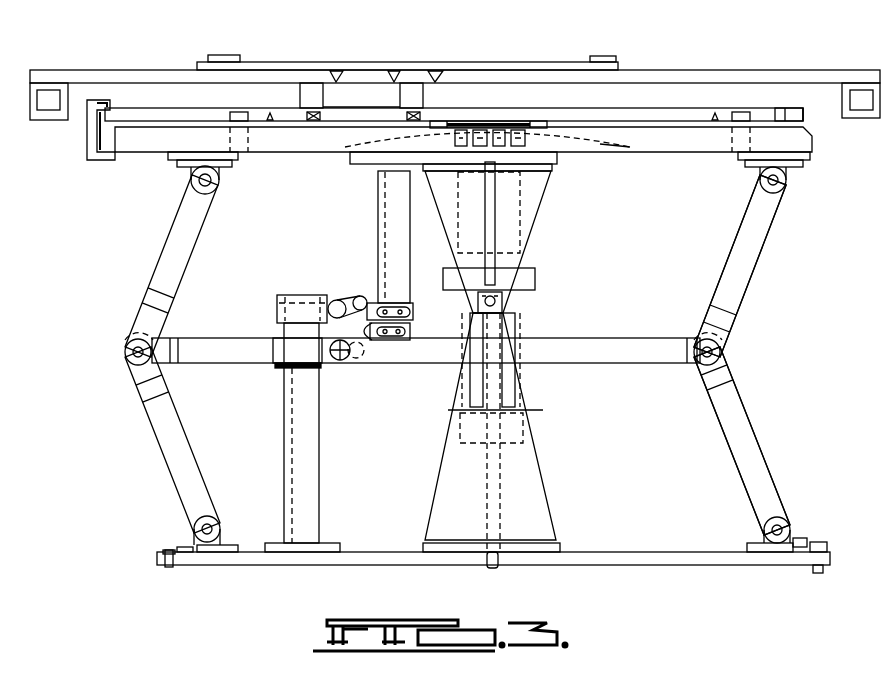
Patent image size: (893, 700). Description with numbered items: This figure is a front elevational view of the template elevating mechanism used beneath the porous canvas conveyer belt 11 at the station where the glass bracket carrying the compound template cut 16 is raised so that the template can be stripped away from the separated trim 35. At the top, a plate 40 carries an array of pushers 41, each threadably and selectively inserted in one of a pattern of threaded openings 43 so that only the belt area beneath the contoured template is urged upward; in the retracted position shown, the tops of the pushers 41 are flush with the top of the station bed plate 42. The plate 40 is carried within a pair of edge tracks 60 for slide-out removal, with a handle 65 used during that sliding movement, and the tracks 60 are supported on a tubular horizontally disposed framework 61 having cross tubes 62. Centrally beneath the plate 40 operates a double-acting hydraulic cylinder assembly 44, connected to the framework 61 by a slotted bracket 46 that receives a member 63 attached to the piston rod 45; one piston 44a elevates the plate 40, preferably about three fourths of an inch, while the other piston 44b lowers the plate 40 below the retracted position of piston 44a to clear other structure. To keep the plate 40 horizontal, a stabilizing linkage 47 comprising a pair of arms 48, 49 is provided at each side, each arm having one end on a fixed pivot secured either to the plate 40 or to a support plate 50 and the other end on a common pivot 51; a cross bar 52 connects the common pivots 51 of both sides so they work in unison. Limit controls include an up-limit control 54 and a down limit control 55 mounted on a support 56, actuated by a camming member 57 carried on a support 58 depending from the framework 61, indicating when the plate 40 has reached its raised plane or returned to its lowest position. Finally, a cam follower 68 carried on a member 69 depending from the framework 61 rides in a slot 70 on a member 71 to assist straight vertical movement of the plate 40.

The porous canvas conveyer belt 11 is at (490, 63).
The compound template cut 16 is at (332, 62).
The separated trim 35 is at (222, 56).
The plate 40 is at (787, 113).
The pushers 41 is at (412, 82).
The station bed plate 42 is at (707, 36).
The threaded openings 43 is at (423, 100).
The double-acting hydraulic cylinder assembly 44 is at (528, 392).
The piston 44a is at (533, 221).
The piston 44b is at (532, 409).
The piston rod 45 is at (557, 168).
The slotted bracket 46 is at (520, 120).
The stabilizing linkage 47 is at (765, 286).
The arm 48 is at (747, 232).
The arm 49 is at (752, 450).
The support plate 50 is at (733, 557).
The common pivot 51 is at (715, 356).
The cross bar 52 is at (617, 347).
The up-limit control 54 is at (345, 300).
The down limit control 55 is at (340, 368).
The support 56 is at (305, 462).
The camming member 57 is at (367, 363).
The support 58 is at (380, 190).
The edge tracks 60 is at (88, 115).
The tubular framework 61 is at (277, 130).
The cross tubes 62 is at (345, 149).
The member 63 is at (607, 143).
The handle 65 is at (703, 110).
The cam follower 68 is at (537, 290).
The member 69 is at (527, 233).
The slot 70 is at (497, 363).
The member 71 is at (545, 443).